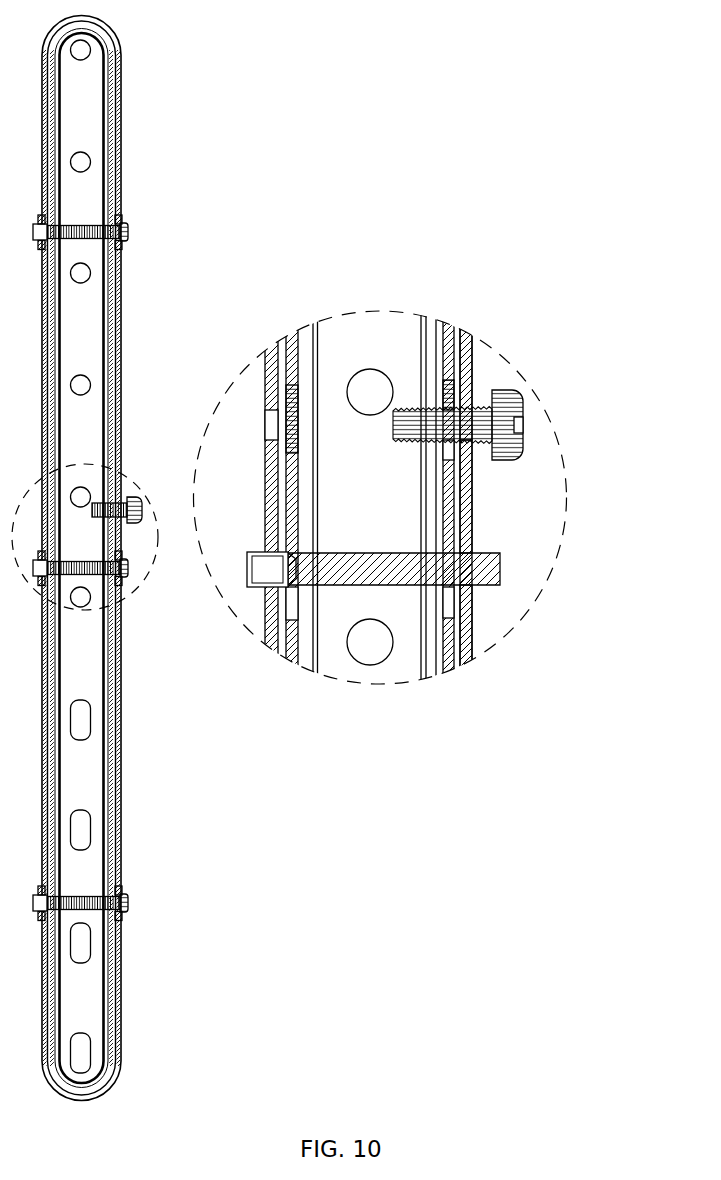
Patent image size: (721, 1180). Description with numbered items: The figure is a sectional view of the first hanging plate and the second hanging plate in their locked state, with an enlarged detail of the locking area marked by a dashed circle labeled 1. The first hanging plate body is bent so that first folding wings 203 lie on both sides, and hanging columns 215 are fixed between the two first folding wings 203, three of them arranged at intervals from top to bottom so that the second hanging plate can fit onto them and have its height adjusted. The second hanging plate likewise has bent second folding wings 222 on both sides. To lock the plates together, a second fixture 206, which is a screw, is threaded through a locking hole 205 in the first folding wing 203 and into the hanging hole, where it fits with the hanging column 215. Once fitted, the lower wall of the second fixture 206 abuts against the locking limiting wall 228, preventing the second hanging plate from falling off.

The enlarged detail region 1 is at (195, 522).
The locking hole 205 is at (480, 398).
The second fixture 206 is at (527, 425).
The locking limiting wall 228 is at (473, 488).
The hanging column 215 is at (483, 582).
The first folding wing 203 is at (480, 652).
The second folding wing 222 is at (455, 663).